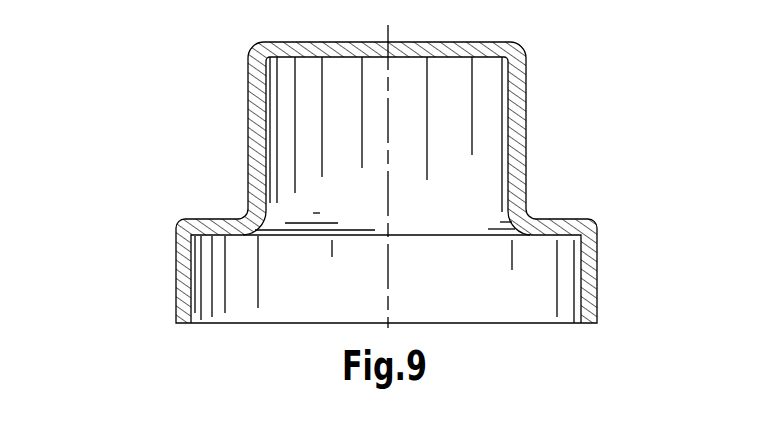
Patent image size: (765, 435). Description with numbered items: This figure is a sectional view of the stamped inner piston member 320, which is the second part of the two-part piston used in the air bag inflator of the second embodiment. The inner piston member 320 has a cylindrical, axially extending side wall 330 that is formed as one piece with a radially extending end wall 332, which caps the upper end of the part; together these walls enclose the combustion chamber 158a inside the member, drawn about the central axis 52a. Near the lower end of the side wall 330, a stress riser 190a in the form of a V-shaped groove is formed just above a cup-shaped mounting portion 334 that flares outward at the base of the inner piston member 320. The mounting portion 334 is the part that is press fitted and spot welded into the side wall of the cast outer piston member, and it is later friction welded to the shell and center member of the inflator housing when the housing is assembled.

The inner piston member 320 is at (331, 168).
The side wall 330 is at (527, 104).
The end wall 332 is at (434, 42).
The mounting portion 334 is at (175, 302).
The stress riser 190a is at (254, 198).
The combustion chamber 158a is at (477, 212).
The central axis 52a is at (387, 40).